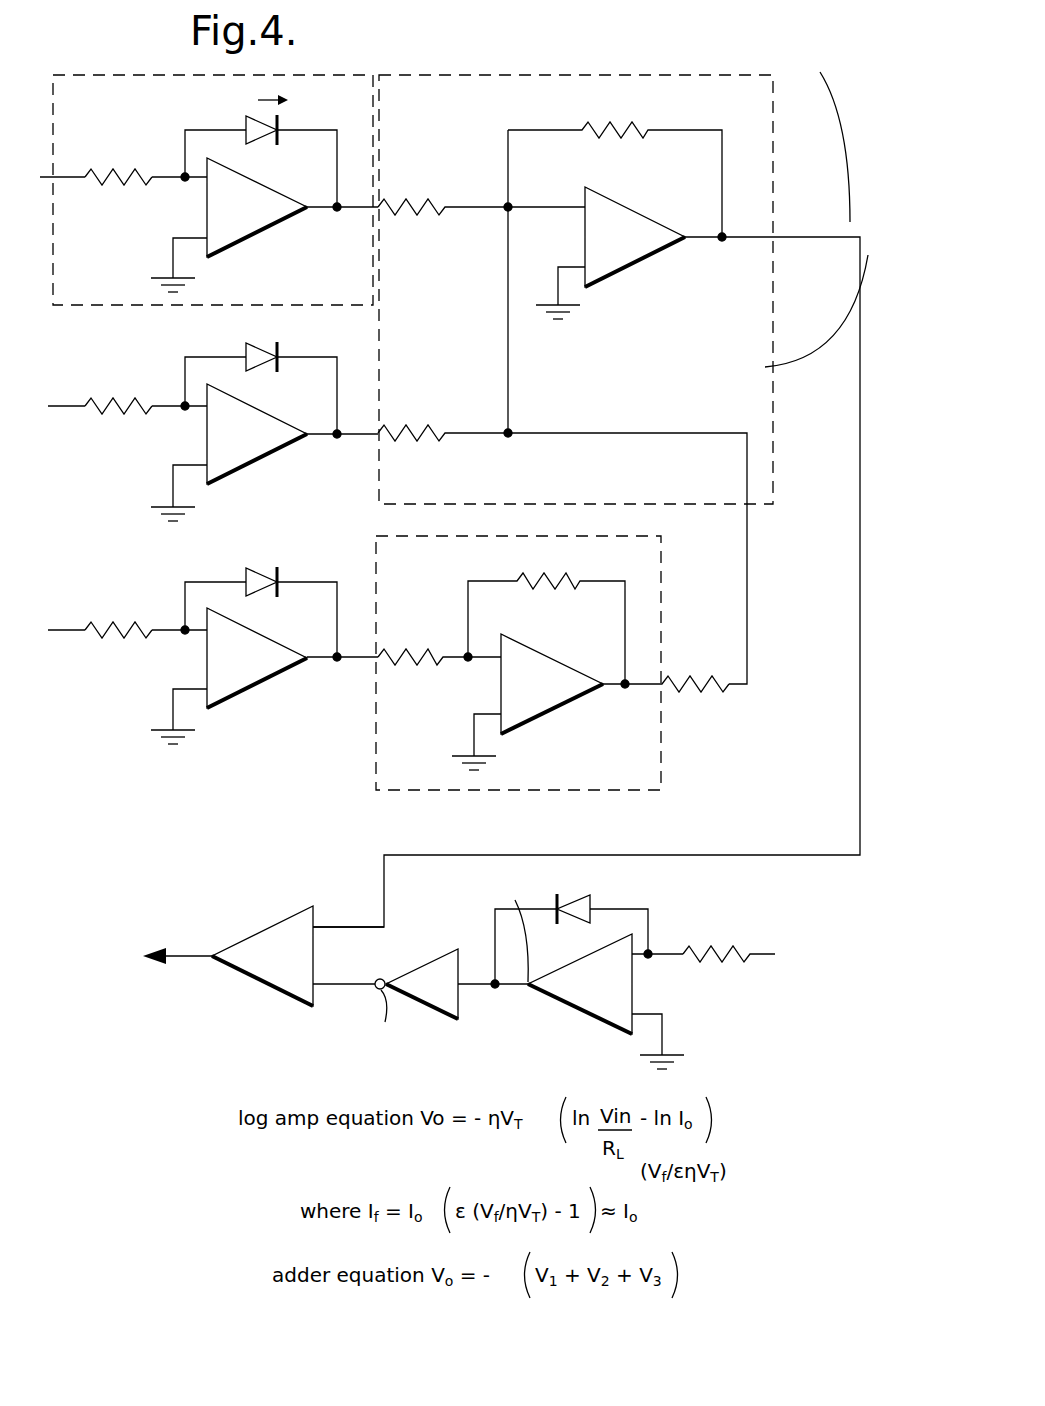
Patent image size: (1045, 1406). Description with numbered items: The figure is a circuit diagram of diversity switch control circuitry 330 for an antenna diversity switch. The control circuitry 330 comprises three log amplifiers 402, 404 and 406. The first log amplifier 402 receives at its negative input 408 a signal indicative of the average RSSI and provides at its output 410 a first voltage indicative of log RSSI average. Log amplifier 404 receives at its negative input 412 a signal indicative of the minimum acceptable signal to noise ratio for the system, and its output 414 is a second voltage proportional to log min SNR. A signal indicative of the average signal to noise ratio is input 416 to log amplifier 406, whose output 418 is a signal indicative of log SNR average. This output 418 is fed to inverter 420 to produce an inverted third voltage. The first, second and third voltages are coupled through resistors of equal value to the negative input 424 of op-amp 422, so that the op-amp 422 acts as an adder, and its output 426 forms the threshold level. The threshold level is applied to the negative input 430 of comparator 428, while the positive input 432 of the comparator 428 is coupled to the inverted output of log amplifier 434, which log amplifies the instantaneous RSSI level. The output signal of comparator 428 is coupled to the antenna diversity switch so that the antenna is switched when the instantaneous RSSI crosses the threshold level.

The diversity switch control circuitry 330 is at (163, 805).
The first log amplifier 402 is at (323, 130).
The log amplifier 404 is at (330, 357).
The log amplifier 406 is at (317, 582).
The negative input 408 is at (207, 188).
The output 410 is at (305, 213).
The negative input 412 is at (207, 415).
The output 414 is at (305, 438).
The input 416 is at (205, 645).
The output 418 is at (303, 665).
The inverter 420 is at (625, 597).
The op-amp 422 is at (722, 158).
The negative input 424 is at (582, 207).
The output 426 is at (688, 245).
The comparator 428 is at (257, 983).
The negative input 430 is at (317, 925).
The positive input 432 is at (318, 990).
The log amplifier 434 is at (650, 930).